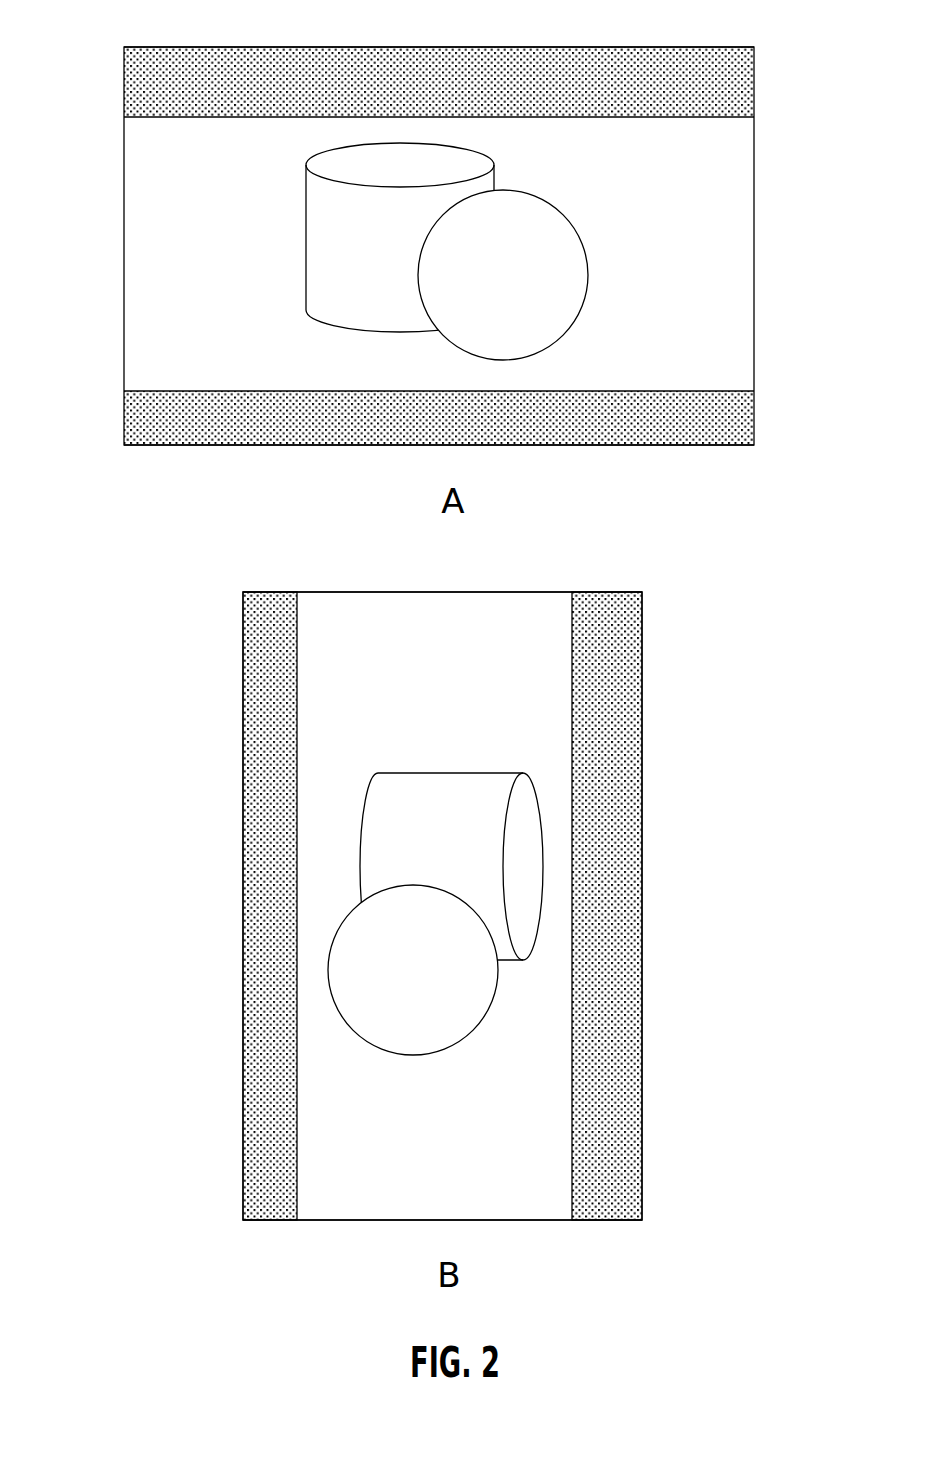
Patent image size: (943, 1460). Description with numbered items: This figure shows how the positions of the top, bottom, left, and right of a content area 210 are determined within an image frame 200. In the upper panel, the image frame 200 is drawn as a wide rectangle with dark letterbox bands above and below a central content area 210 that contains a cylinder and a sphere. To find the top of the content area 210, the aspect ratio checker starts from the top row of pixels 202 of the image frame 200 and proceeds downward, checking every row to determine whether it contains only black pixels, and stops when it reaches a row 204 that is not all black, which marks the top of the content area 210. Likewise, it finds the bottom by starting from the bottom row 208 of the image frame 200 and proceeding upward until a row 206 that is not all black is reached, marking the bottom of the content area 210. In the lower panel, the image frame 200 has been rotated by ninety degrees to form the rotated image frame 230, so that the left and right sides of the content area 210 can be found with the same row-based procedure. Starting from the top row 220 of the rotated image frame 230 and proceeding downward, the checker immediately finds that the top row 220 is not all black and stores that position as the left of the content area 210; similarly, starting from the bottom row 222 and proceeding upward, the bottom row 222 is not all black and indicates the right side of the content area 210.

The image frame 200 is at (498, 47).
The top row of pixels 202 is at (122, 47).
The row of pixels that is not all black 204 is at (122, 117).
The row that is not all black 206 is at (122, 391).
The bottom row 208 is at (122, 445).
The content area 210 is at (732, 241).
The top row 220 is at (241, 592).
The bottom row 222 is at (241, 1220).
The rotated image frame 230 is at (592, 591).